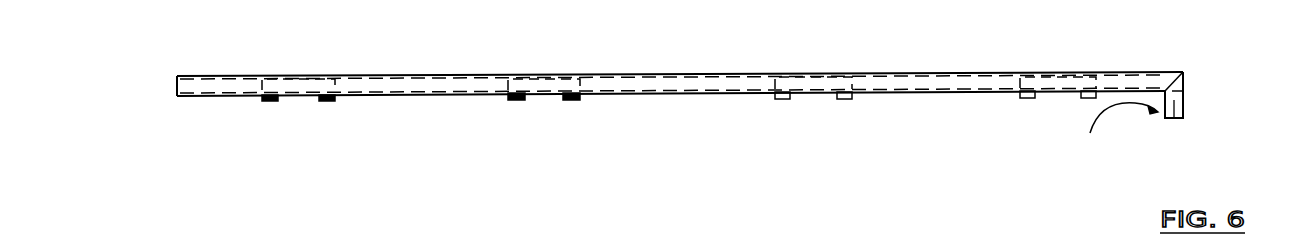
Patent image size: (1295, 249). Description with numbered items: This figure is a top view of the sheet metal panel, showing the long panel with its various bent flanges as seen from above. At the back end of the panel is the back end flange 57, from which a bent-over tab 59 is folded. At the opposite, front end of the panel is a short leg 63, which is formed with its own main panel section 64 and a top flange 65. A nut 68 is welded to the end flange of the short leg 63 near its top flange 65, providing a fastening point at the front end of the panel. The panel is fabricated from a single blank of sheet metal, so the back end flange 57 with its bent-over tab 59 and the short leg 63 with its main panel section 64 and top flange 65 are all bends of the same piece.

The back end flange 57 is at (177, 83).
The bent-over tab 59 is at (183, 97).
The short leg 63 is at (1185, 100).
The main panel section 64 is at (1183, 72).
The top flange 65 is at (1177, 108).
The nut 68 is at (1115, 133).